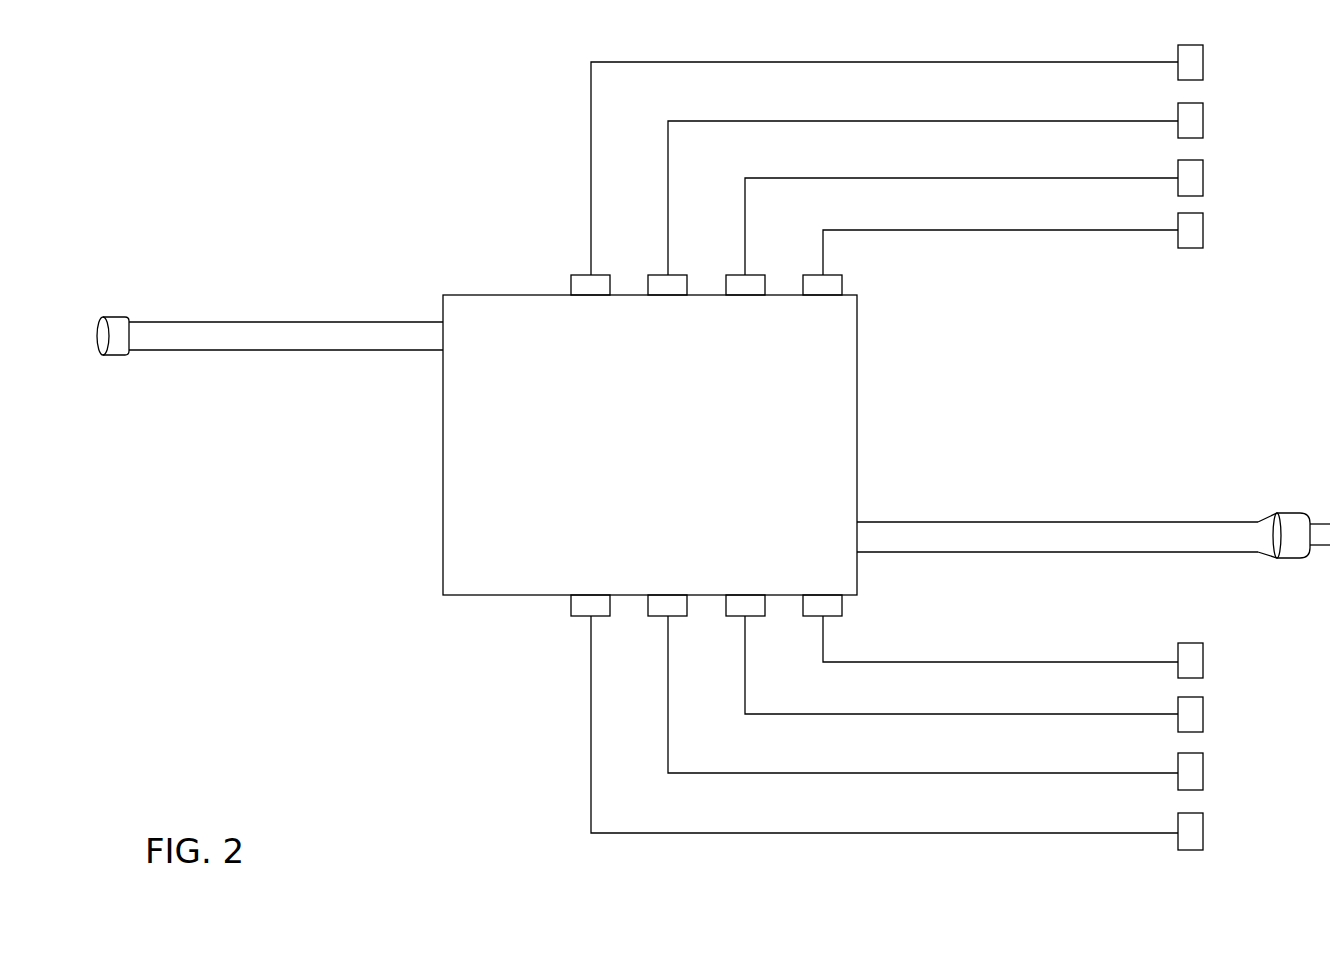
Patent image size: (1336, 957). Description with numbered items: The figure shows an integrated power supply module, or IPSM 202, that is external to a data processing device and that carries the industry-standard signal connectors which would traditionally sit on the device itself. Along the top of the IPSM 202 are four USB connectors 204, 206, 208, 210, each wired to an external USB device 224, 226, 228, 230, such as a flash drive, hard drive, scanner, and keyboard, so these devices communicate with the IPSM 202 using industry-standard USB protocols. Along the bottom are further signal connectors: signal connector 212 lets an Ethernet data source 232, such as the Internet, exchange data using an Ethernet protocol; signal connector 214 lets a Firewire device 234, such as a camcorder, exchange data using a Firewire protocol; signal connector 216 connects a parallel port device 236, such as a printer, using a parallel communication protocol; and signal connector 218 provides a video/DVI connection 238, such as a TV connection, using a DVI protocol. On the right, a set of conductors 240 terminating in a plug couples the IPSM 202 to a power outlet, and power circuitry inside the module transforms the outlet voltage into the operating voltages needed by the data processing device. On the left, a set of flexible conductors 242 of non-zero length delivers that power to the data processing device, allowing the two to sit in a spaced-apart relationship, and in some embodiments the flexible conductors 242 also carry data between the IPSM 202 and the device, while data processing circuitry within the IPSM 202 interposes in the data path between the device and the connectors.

The integrated power supply module (IPSM) 202 is at (650, 445).
The USB connector 204 is at (592, 285).
The USB connector 206 is at (672, 289).
The USB connector 208 is at (745, 288).
The USB connector 210 is at (825, 291).
The signal connector 212 is at (590, 607).
The signal connector 214 is at (672, 604).
The signal connector 216 is at (745, 605).
The signal connector 218 is at (825, 603).
The USB device 224 is at (1188, 70).
The USB device 226 is at (1188, 128).
The USB device 228 is at (1188, 185).
The USB device 230 is at (1188, 238).
The Ethernet data source 232 is at (1188, 826).
The Firewire device 234 is at (1188, 766).
The parallel port device 236 is at (1188, 709).
The video/DVI connection 238 is at (1188, 655).
The set of conductors 240 is at (1093, 535).
The flexible conductors 242 is at (270, 336).